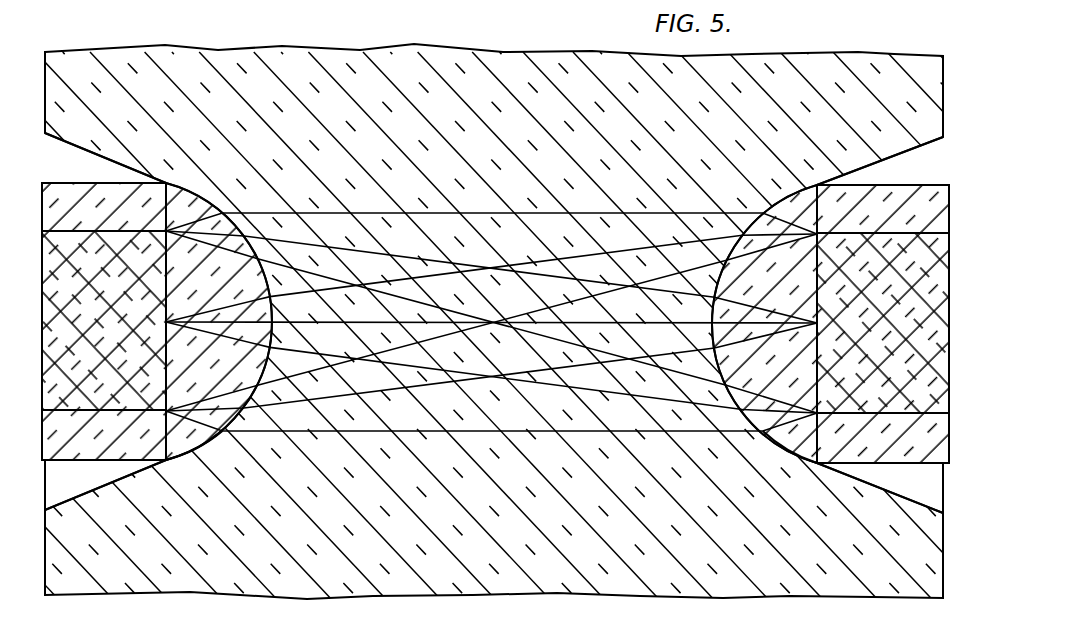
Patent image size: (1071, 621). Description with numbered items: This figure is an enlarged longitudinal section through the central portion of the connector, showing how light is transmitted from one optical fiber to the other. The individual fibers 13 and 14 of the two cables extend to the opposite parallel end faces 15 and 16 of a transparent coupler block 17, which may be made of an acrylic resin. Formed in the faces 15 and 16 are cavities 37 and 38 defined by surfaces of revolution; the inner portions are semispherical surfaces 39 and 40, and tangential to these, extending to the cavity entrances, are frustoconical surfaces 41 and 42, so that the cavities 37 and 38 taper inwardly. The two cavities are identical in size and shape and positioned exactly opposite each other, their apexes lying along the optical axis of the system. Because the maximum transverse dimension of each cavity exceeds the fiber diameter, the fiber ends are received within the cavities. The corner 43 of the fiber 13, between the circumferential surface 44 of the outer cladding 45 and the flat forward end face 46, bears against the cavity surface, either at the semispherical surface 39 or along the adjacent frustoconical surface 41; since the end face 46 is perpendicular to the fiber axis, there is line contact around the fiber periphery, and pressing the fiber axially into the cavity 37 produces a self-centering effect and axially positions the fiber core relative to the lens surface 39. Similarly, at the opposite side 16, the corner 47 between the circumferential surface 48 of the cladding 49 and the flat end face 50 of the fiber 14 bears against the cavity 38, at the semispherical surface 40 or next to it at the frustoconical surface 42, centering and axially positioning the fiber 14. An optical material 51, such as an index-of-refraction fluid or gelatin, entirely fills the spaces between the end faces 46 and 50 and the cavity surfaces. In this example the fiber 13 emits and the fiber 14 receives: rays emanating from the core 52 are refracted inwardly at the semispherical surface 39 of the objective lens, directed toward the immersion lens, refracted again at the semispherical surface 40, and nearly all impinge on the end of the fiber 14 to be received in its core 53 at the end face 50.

The optical fiber 13 is at (79, 178).
The optical fiber 14 is at (901, 178).
The end face 15 is at (41, 545).
The end face 16 is at (946, 560).
The transparent coupler block 17 is at (531, 48).
The cavity 37 is at (224, 442).
The cavity 38 is at (769, 446).
The semispherical surface 39 is at (256, 367).
The semispherical surface 40 is at (726, 357).
The frustoconical surface 41 is at (94, 488).
The frustoconical surface 42 is at (887, 492).
The corner 43 is at (176, 183).
The circumferential surface 44 is at (97, 183).
The outer cladding 45 is at (66, 231).
The end face 46 is at (171, 290).
The corner 47 is at (817, 184).
The circumferential surface 48 is at (866, 185).
The cladding 49 is at (894, 233).
The end face 50 is at (822, 284).
The optical material 51 is at (170, 367).
The core 52 is at (106, 334).
The core 53 is at (910, 334).